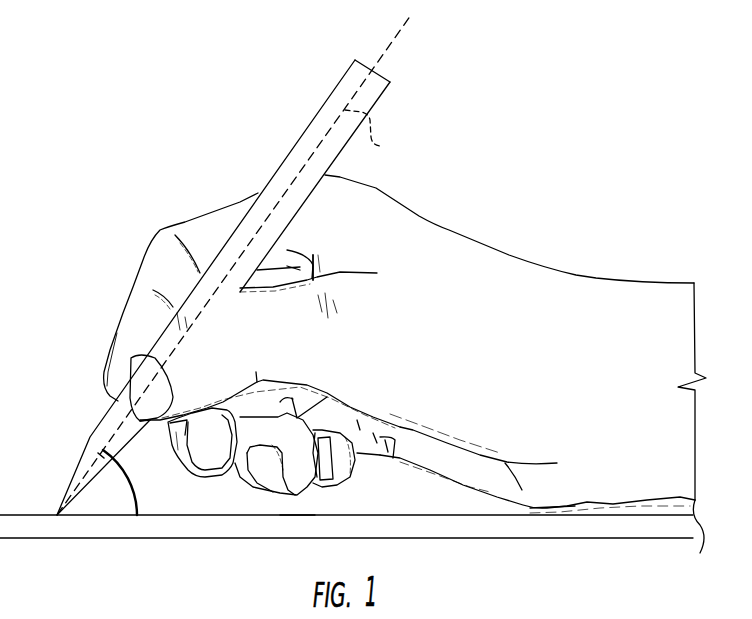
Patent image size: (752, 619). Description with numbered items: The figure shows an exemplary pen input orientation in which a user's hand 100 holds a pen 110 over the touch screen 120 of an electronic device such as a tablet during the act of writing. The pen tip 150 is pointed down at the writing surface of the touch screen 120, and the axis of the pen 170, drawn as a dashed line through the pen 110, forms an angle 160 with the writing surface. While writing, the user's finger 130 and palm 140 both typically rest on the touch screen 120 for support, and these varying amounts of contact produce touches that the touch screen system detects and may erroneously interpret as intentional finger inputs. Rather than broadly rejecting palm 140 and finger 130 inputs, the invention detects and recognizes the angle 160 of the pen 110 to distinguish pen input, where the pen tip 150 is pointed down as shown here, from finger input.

The user's hand 100 is at (455, 247).
The pen 110 is at (281, 165).
The touch screen 120 is at (653, 527).
The finger 130 is at (295, 512).
The palm 140 is at (551, 517).
The pen tip 150 is at (83, 527).
The angle 160 is at (127, 443).
The axis of the pen 170 is at (380, 146).